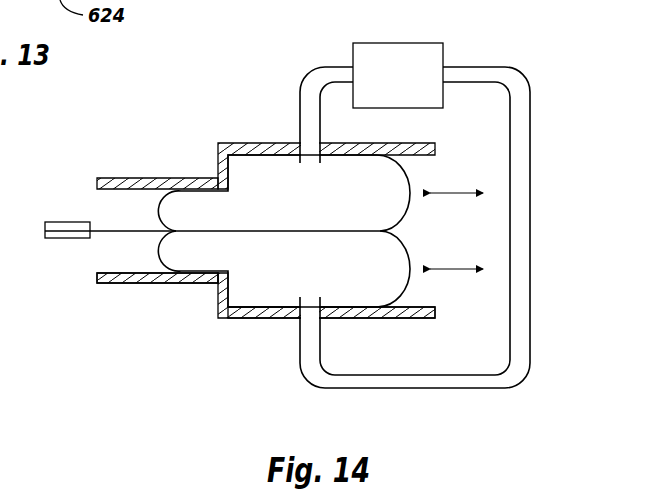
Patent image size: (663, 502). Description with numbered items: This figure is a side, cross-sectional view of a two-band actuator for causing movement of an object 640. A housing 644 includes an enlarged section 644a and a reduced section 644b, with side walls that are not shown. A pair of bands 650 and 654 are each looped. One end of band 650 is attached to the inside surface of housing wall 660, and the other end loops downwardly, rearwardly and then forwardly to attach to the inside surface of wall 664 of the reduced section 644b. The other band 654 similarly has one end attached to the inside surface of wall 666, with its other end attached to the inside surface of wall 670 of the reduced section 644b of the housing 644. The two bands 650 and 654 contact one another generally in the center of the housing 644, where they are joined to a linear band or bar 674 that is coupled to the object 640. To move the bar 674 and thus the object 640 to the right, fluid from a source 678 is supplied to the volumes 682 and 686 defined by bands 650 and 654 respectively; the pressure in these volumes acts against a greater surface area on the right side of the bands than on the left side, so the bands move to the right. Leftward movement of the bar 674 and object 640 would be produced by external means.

The object 640 is at (63, 238).
The housing 644 is at (241, 255).
The enlarged section 644a is at (265, 320).
The reduced section 644b is at (125, 284).
The band 650 is at (410, 182).
The band 654 is at (402, 282).
The housing wall 660 is at (272, 142).
The wall 664 is at (125, 178).
The wall 666 is at (345, 320).
The wall 670 is at (165, 284).
The linear band or bar 674 is at (110, 228).
The source 678 is at (445, 52).
The volume 682 is at (332, 210).
The volume 686 is at (343, 276).